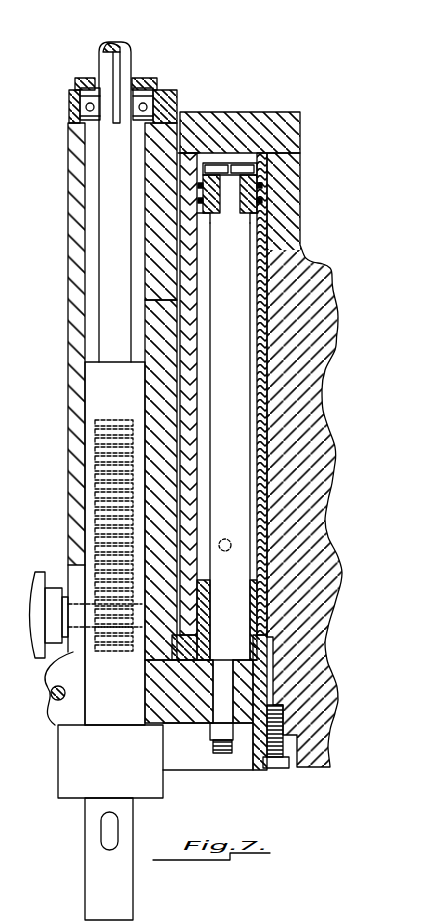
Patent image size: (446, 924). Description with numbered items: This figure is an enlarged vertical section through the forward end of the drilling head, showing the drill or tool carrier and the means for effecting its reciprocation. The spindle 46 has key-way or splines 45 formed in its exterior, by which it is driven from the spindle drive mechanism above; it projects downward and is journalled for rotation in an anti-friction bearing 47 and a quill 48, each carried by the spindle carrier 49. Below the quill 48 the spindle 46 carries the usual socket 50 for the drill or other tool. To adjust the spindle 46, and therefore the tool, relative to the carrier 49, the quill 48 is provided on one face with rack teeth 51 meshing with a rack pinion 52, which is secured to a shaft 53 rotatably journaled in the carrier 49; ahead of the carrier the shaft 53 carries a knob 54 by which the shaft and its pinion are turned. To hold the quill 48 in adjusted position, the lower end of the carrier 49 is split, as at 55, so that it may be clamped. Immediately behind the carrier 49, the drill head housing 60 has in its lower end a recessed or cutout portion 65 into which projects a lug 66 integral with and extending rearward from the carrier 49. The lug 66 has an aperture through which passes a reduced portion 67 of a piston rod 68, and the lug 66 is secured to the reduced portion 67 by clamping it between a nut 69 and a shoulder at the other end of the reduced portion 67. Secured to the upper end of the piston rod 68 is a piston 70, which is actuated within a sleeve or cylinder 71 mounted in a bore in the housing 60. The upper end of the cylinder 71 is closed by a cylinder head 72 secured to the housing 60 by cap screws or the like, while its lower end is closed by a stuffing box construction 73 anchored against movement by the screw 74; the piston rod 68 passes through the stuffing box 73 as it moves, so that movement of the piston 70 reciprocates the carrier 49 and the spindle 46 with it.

The key-way or splines 45 is at (114, 49).
The spindle 46 is at (122, 71).
The anti-friction bearing 47 is at (178, 104).
The quill 48 is at (97, 393).
The spindle carrier 49 is at (72, 259).
The socket 50 is at (95, 798).
The rack teeth 51 is at (115, 426).
The rack pinion 52 is at (97, 632).
The shaft 53 is at (88, 602).
The knob 54 is at (42, 637).
The slit 55 is at (72, 652).
The drill head housing 60 is at (323, 289).
The recessed or cutout portion 65 is at (260, 762).
The lug 66 is at (191, 721).
The reduced portion 67 is at (241, 712).
The piston rod 68 is at (232, 507).
The nut 69 is at (210, 736).
The piston 70 is at (203, 182).
The sleeve or cylinder 71 is at (266, 226).
The cylinder head 72 is at (301, 131).
The stuffing box construction 73 is at (262, 619).
The screw 74 is at (280, 768).